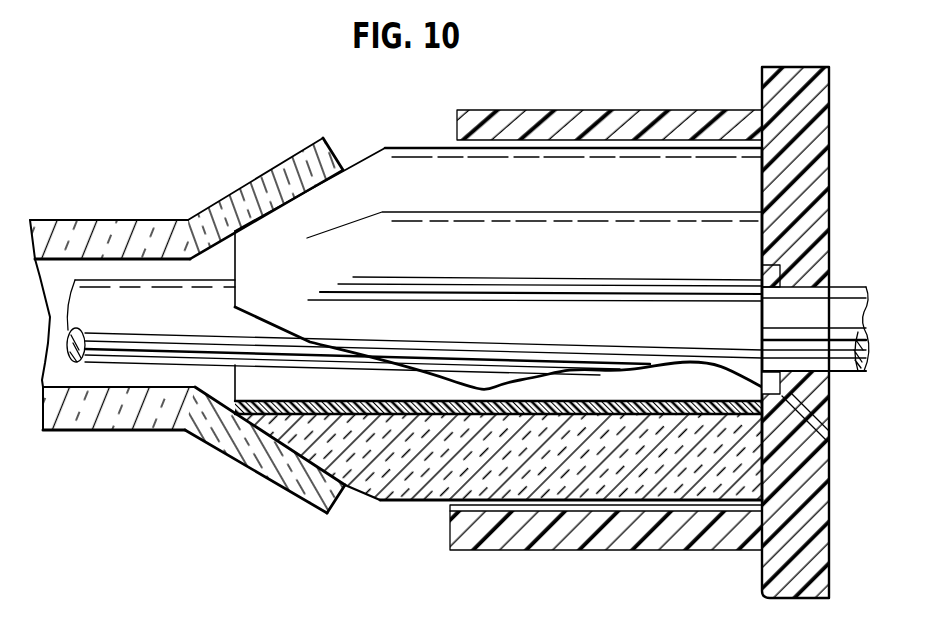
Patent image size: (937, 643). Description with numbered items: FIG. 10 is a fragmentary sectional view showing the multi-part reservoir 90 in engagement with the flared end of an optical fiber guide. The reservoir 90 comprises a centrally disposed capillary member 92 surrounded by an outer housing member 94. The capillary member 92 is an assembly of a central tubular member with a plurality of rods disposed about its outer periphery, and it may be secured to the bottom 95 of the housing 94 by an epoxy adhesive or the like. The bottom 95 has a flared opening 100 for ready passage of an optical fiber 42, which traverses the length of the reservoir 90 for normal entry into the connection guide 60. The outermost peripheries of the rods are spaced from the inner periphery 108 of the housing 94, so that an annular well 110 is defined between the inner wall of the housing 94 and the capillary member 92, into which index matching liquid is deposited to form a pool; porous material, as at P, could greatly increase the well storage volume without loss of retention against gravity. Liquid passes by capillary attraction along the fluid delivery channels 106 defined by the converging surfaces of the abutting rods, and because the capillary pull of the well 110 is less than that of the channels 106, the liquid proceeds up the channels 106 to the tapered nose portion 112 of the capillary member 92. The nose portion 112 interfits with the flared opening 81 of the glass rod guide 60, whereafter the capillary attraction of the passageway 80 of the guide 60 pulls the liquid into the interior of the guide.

The connection guide 60 is at (88, 220).
The passageway 80 is at (182, 273).
The flared opening 81 is at (205, 247).
The tapered nose portion 112 is at (365, 158).
The capillary member 92 is at (417, 145).
The annular well 110 is at (522, 146).
The inner periphery 108 is at (697, 147).
The fluid delivery channels 106 is at (565, 200).
The porous material P is at (570, 130).
The outer housing member 94 is at (620, 110).
The bottom 95 is at (820, 165).
The flared opening 100 is at (805, 248).
The optical fiber 42 is at (835, 290).
The reservoir 90 is at (412, 535).